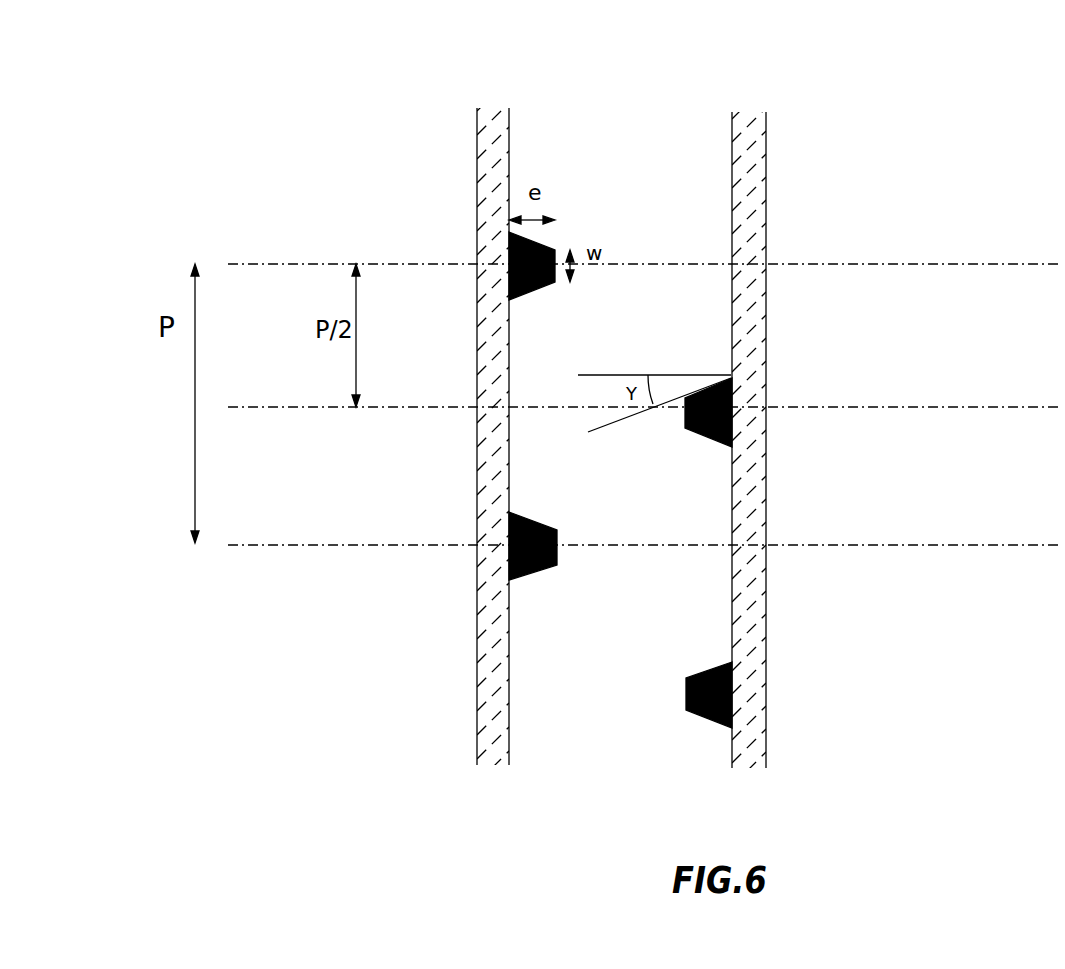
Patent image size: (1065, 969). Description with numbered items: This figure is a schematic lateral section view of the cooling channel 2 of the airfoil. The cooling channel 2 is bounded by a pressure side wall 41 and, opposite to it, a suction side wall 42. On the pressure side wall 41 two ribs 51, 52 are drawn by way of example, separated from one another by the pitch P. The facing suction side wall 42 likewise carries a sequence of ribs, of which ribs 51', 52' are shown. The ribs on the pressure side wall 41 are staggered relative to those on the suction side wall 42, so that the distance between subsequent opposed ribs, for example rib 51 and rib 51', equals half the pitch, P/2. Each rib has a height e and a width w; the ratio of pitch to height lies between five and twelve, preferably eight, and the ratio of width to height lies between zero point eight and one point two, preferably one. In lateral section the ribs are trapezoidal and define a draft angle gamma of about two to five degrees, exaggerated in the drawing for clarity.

The cooling channel 2 is at (625, 163).
The pressure side wall 41 is at (473, 127).
The suction side wall 42 is at (763, 156).
The rib 51 is at (464, 238).
The rib 52 is at (434, 526).
The rib 51' is at (780, 441).
The rib 52' is at (789, 721).